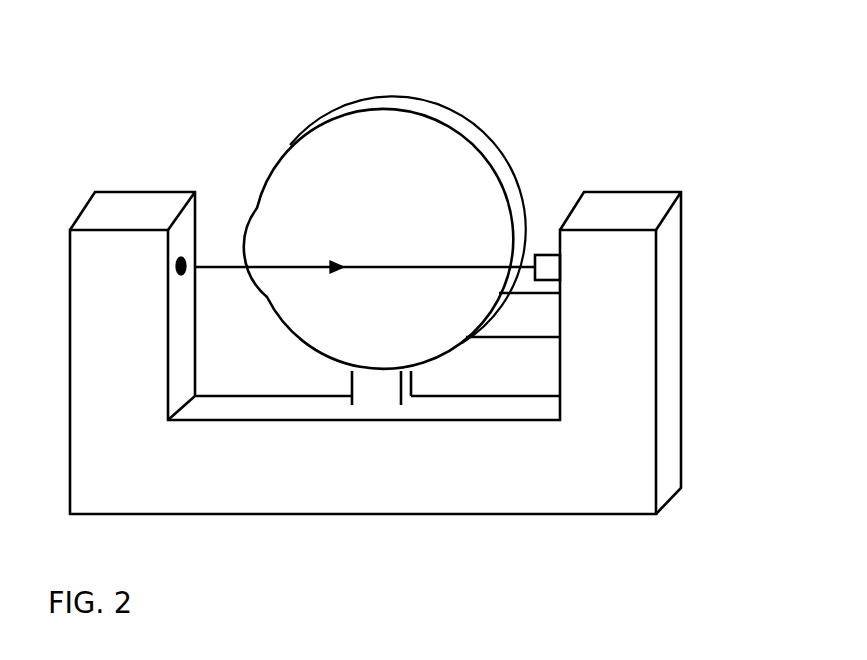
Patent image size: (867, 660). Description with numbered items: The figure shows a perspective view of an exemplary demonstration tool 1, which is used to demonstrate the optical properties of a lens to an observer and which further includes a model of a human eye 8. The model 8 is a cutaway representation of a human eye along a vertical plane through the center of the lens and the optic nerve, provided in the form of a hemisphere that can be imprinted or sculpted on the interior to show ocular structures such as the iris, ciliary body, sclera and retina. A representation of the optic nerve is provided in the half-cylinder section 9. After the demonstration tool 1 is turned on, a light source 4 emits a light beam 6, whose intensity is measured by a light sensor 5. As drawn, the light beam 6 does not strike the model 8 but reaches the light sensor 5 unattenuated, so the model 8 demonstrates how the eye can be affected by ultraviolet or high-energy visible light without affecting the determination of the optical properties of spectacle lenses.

The demonstration tool 1 is at (636, 181).
The light source 4 is at (186, 257).
The light sensor 5 is at (548, 255).
The light beam 6 is at (259, 261).
The model of a human eye 8 is at (497, 150).
The half-cylinder section 9 is at (513, 315).